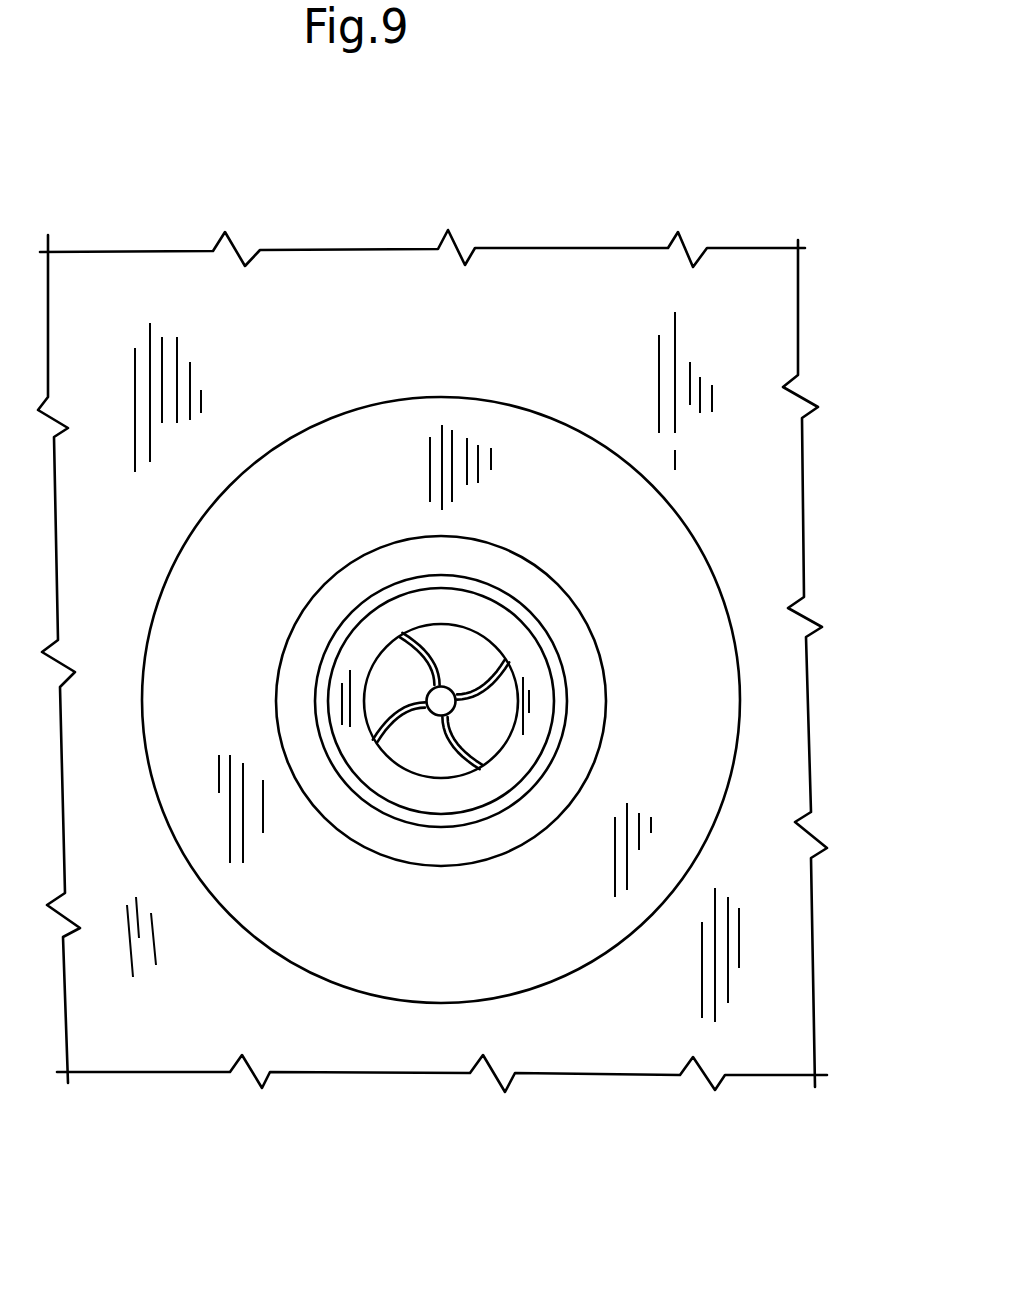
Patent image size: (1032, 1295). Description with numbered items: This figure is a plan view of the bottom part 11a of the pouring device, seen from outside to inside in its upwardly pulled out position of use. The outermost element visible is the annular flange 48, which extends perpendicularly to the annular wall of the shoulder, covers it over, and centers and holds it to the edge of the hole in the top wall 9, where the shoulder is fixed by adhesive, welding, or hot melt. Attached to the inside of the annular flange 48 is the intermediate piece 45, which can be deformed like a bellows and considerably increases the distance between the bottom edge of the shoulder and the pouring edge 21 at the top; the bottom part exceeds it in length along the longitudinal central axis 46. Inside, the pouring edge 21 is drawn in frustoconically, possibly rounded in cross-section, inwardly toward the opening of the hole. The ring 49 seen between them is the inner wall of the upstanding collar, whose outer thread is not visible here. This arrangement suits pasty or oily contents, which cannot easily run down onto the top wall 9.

The top wall 9 is at (173, 1010).
The bottom part 11a is at (684, 571).
The annular flange 48 is at (537, 467).
The intermediate piece 45 is at (575, 776).
The pouring edge 21 is at (315, 685).
The ring 49 is at (373, 635).
The longitudinal central axis 46 is at (423, 710).